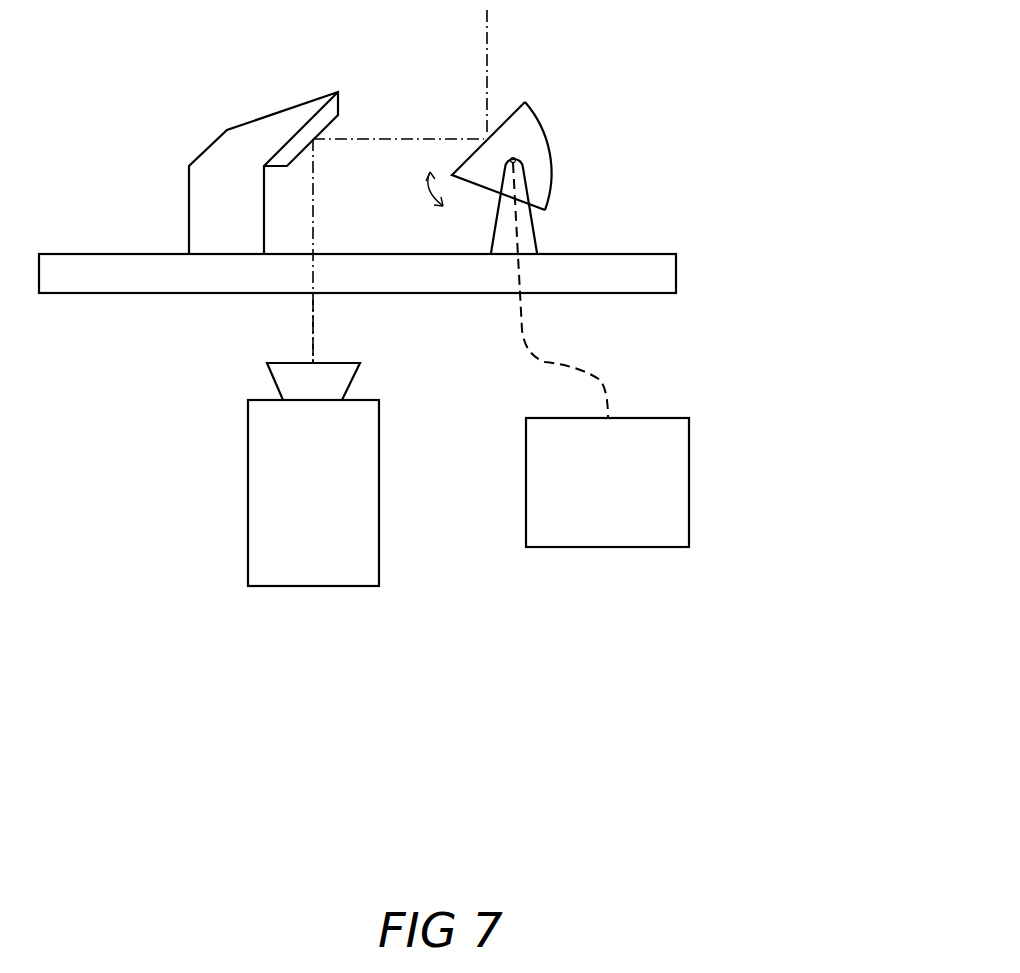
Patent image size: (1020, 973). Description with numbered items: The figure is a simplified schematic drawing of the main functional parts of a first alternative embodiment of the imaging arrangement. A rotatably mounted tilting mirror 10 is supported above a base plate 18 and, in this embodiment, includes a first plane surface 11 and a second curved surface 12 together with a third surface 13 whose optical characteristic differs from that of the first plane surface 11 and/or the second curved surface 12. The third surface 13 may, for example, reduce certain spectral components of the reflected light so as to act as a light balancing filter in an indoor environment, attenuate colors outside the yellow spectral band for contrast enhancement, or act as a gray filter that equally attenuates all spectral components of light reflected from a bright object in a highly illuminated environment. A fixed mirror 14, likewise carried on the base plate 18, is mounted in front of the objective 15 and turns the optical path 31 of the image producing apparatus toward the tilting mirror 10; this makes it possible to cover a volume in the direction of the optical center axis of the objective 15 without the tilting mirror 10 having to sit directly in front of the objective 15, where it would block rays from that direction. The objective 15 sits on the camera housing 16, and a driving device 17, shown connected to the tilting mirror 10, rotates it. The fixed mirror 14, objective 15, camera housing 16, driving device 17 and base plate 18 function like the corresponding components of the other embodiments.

The tilting mirror 10 is at (485, 162).
The first plane surface 11 is at (497, 123).
The second curved surface 12 is at (553, 149).
The third surface 13 is at (493, 197).
The fixed mirror 14 is at (317, 120).
The objective 15 is at (302, 378).
The camera housing 16 is at (270, 471).
The driving device 17 is at (643, 519).
The base plate 18 is at (648, 265).
The optical path 31 is at (312, 325).